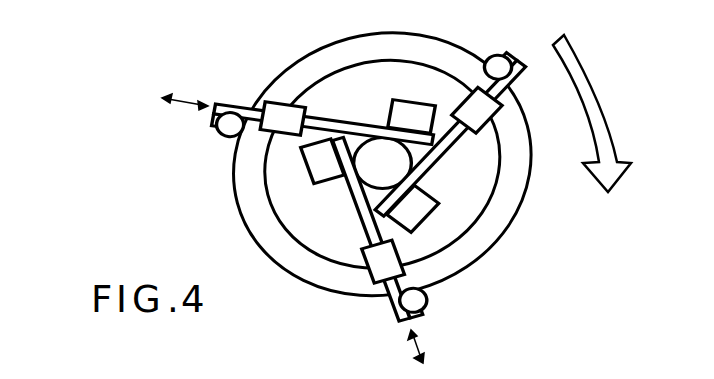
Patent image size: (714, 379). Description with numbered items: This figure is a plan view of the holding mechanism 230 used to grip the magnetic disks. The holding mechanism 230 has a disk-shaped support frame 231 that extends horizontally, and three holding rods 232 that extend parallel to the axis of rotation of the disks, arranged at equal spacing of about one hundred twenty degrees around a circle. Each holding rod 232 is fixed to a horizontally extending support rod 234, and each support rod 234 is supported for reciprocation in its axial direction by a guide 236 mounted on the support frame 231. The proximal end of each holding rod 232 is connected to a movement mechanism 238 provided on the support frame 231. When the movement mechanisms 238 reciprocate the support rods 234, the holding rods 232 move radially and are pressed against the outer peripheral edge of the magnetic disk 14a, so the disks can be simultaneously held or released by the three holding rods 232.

The magnetic disk 14a is at (513, 230).
The holding mechanism 230 is at (373, 170).
The support frame 231 is at (317, 215).
The holding rod 232 is at (498, 53).
The support rod 234 is at (343, 120).
The guide 236 is at (389, 202).
The movement mechanism 238 is at (412, 103).